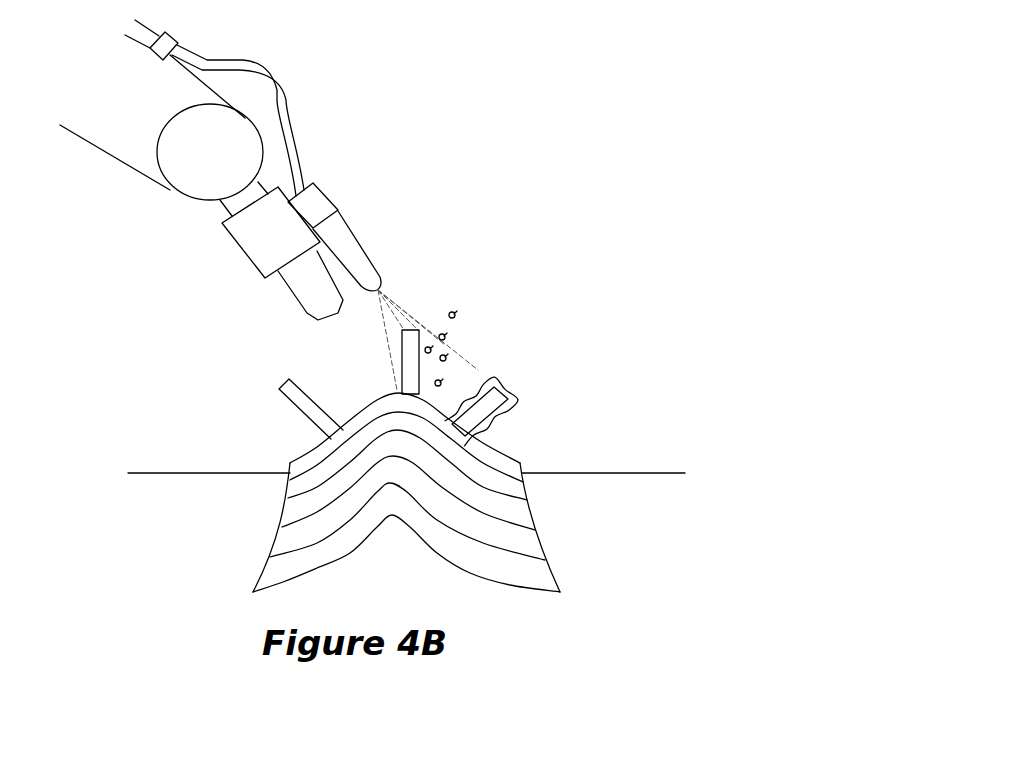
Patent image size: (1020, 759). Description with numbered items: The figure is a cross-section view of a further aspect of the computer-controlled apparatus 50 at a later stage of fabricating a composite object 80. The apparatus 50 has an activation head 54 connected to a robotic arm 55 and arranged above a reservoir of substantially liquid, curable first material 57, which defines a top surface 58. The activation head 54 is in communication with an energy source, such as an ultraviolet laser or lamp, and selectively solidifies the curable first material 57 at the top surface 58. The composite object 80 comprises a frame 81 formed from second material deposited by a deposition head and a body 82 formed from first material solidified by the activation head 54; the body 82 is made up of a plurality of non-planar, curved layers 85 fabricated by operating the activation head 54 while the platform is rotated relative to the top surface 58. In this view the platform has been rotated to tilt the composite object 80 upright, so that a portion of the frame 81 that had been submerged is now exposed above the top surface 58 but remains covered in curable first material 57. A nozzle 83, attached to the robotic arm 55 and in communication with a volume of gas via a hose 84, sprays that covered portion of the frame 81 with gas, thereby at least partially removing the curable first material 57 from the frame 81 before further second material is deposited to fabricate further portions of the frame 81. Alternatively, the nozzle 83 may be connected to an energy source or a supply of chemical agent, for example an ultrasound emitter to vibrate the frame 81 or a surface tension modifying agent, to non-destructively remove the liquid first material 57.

The computer-controlled apparatus 50 is at (490, 180).
The activation head 54 is at (300, 285).
The robotic arm 55 is at (120, 135).
The curable first material 57 is at (612, 535).
The top surface 58 is at (578, 473).
The composite object 80 is at (222, 529).
The frame 81 is at (503, 387).
The body 82 is at (555, 575).
The nozzle 83 is at (352, 253).
The hose 84 is at (295, 176).
The non-planar curved layers 85 is at (302, 538).